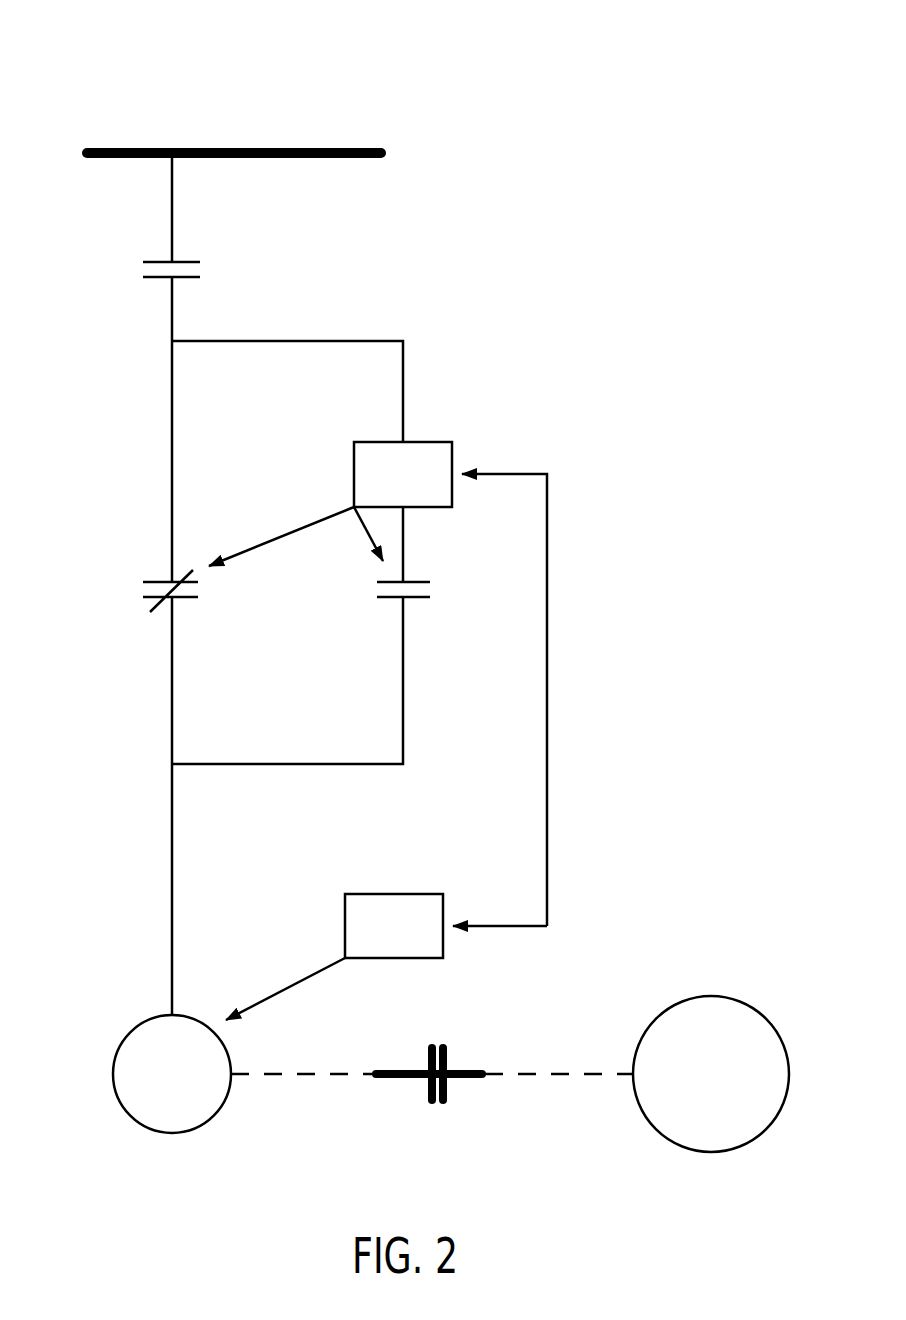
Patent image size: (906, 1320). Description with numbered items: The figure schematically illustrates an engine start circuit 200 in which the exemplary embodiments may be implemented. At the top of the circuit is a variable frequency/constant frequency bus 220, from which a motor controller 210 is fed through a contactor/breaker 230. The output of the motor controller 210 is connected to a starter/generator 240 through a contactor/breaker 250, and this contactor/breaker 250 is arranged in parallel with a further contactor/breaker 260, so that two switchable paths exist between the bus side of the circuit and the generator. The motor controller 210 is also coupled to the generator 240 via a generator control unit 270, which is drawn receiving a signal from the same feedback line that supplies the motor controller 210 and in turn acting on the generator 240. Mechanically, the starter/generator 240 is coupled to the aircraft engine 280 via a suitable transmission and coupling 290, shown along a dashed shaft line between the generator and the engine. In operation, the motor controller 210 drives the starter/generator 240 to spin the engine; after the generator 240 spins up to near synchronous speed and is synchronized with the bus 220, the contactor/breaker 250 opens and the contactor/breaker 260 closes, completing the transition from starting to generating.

The engine start circuit 200 is at (115, 64).
The motor controller 210 is at (354, 452).
The variable frequency/constant frequency (VF/CF) bus 220 is at (85, 155).
The contactor/breaker 230 is at (196, 268).
The starter/generator 240 is at (226, 1094).
The contactor/breaker 250 is at (433, 596).
The contactor/breaker 260 is at (194, 590).
The generator control unit (GCU) 270 is at (345, 910).
The aircraft engine 280 is at (692, 997).
The transmission and coupling 290 is at (417, 1068).